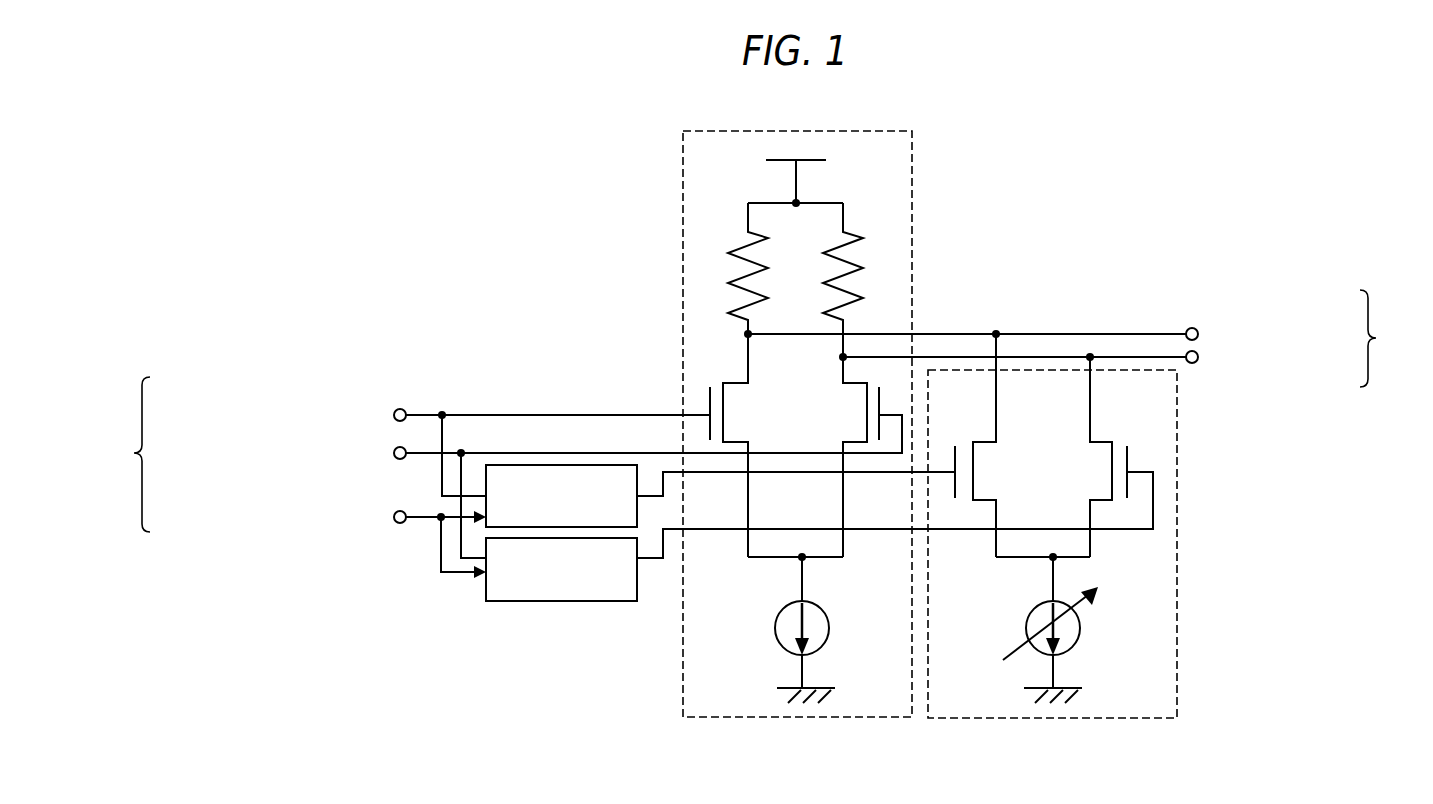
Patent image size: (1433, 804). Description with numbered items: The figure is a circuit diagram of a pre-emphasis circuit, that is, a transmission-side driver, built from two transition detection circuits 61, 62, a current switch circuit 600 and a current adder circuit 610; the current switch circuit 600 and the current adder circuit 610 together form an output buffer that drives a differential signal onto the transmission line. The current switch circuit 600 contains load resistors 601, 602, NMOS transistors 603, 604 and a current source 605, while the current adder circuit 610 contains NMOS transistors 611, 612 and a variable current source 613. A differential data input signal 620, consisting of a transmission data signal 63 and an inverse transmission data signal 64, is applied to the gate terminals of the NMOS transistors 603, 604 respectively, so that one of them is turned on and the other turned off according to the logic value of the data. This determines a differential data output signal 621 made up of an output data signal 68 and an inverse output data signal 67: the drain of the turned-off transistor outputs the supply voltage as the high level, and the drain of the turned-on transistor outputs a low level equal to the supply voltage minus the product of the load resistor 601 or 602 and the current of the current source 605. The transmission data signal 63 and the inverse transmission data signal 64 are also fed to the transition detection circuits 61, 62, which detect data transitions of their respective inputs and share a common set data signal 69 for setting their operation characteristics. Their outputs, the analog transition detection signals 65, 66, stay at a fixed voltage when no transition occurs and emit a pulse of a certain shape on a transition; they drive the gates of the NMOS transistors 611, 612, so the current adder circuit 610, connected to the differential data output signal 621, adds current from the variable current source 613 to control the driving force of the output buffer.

The current switch circuit 600 is at (683, 133).
The load resistor 601 is at (738, 264).
The load resistor 602 is at (855, 258).
The NMOS transistor 603 is at (735, 383).
The NMOS transistor 604 is at (860, 410).
The current source 605 is at (829, 622).
The current adder circuit 610 is at (1177, 655).
The NMOS transistor 611 is at (985, 442).
The NMOS transistor 612 is at (1100, 468).
The variable current source 613 is at (1079, 622).
The transition detection circuit 61 is at (535, 465).
The transition detection circuit 62 is at (535, 601).
The transmission data signal 63 is at (297, 390).
The inverse transmission data signal 64 is at (202, 485).
The transition detection signal 65 is at (648, 490).
The transition detection signal 66 is at (650, 562).
The inverse output data signal 67 is at (1275, 290).
The output data signal 68 is at (1277, 385).
The set data signal 69 is at (312, 533).
The differential data input signal 620 is at (122, 454).
The differential data output signal 621 is at (1390, 338).